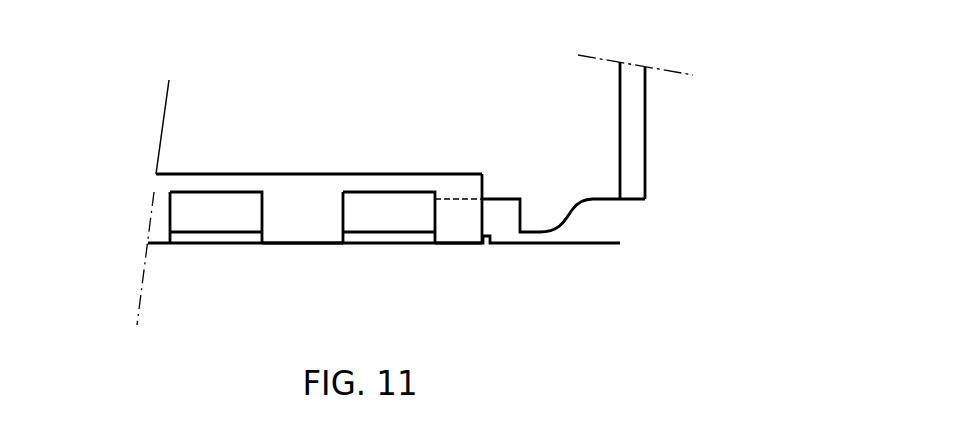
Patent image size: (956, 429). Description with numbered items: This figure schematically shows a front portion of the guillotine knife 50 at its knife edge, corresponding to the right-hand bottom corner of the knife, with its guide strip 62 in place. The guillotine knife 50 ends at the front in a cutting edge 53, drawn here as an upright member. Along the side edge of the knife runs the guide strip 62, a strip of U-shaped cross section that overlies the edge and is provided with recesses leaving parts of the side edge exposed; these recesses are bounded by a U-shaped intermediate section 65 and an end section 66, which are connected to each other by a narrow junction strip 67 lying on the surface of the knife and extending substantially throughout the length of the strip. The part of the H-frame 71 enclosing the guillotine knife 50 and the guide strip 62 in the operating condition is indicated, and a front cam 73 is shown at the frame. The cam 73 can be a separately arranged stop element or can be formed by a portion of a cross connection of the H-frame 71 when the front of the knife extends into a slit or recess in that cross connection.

The guillotine knife 50 is at (220, 213).
The cutting edge 53 is at (645, 166).
The guide strip 62 is at (260, 160).
The intermediate section 65 is at (295, 212).
The end section 66 is at (457, 218).
The junction strip 67 is at (403, 174).
The H-frame 71 is at (375, 247).
The front cam 73 is at (487, 250).